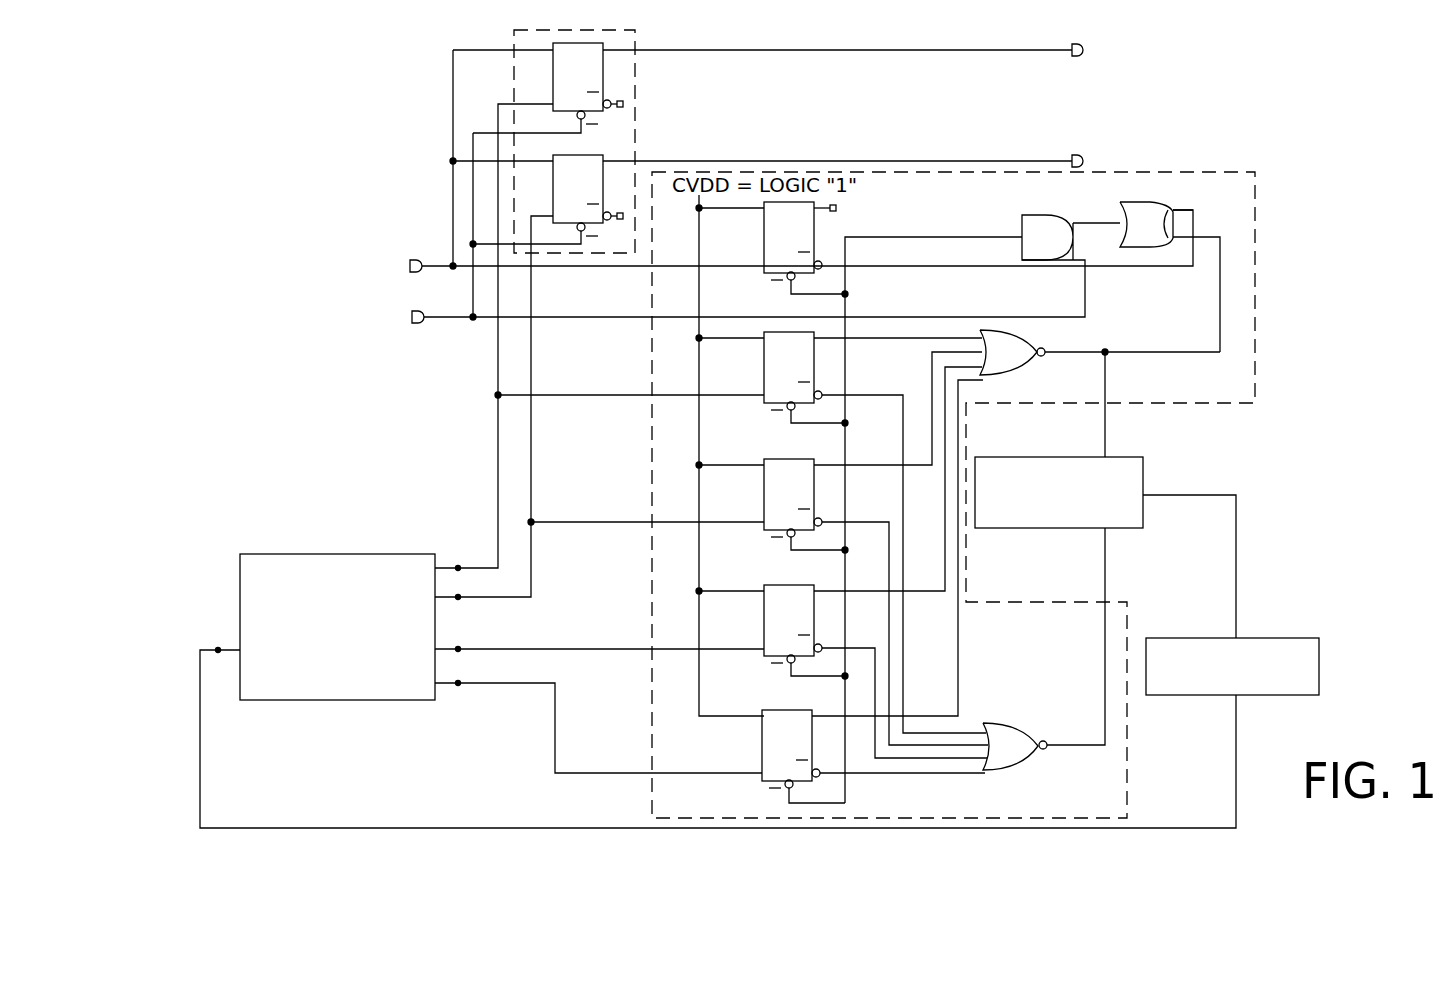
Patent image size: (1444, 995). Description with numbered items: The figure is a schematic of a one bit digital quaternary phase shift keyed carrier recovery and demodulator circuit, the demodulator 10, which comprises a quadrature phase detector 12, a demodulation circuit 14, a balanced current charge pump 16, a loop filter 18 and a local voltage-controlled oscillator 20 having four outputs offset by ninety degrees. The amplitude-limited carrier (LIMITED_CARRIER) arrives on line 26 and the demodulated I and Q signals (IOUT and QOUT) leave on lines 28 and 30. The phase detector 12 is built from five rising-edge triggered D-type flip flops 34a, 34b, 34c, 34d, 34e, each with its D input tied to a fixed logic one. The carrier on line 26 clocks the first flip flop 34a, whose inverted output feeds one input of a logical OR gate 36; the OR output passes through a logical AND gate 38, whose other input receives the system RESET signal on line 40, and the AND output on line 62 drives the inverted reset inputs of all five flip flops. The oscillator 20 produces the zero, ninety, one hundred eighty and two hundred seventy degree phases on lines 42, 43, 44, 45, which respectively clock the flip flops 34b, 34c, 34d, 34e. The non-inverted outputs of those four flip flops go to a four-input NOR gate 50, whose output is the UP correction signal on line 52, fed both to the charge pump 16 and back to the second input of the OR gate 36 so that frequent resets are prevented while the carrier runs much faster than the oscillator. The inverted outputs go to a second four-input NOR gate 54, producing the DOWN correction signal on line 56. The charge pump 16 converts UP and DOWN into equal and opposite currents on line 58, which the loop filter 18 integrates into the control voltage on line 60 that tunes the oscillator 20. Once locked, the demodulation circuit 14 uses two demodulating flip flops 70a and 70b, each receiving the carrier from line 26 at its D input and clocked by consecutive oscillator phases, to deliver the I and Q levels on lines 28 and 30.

The demodulator 10 is at (322, 104).
The quadrature phase detector 12 is at (652, 492).
The demodulation circuit 14 is at (635, 80).
The balanced current charge pump 16 is at (1143, 518).
The loop filter 18 is at (1205, 695).
The local voltage-controlled oscillator 20 is at (338, 700).
The line 26 is at (440, 266).
The line 28 is at (905, 52).
The line 30 is at (905, 161).
The D-type flip flop 34a is at (764, 250).
The D-type flip flop 34b is at (764, 380).
The D-type flip flop 34c is at (764, 502).
The D-type flip flop 34d is at (764, 630).
The D-type flip flop 34e is at (762, 757).
The logical OR gate 36 is at (1145, 202).
The logical AND gate 38 is at (1022, 226).
The line 40 is at (447, 317).
The line 42 is at (498, 460).
The line 43 is at (531, 568).
The line 44 is at (601, 649).
The line 45 is at (555, 748).
The four-input logical NOR gate 50 is at (1015, 375).
The line 52 is at (1057, 352).
The four-input logical NOR gate 54 is at (1010, 723).
The line 56 is at (1105, 667).
The line 58 is at (1187, 495).
The line 60 is at (1236, 782).
The line 62 is at (910, 237).
The demodulating D-type flip flop 70a is at (553, 92).
The demodulating D-type flip flop 70b is at (553, 202).